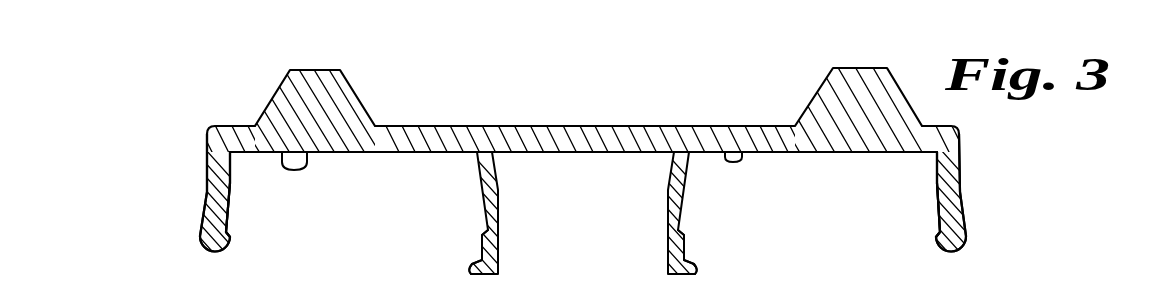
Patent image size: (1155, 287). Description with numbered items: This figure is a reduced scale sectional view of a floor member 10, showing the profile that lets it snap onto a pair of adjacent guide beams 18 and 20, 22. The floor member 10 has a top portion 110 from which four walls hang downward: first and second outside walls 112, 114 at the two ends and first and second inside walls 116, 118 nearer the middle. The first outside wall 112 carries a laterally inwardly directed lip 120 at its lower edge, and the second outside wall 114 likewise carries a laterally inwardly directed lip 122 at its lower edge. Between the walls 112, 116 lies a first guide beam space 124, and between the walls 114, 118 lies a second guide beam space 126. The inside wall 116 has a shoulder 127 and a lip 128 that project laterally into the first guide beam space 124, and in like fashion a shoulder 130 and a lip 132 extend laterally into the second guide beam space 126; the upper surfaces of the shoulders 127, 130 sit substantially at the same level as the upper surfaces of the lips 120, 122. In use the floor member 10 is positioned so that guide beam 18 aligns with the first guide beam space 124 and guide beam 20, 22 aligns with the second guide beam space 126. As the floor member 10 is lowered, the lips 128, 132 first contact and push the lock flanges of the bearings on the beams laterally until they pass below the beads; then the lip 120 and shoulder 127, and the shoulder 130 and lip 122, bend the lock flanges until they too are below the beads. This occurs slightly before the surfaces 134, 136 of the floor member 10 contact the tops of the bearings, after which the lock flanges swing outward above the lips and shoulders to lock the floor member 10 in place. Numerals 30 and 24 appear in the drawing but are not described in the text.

The floor member 10 is at (560, 125).
The top portion 110 is at (660, 125).
The first outside wall 112 is at (208, 208).
The second outside wall 114 is at (965, 210).
The first inside wall 116 is at (482, 197).
The second inside wall 118 is at (686, 192).
The lip 120 is at (229, 236).
The lip 122 is at (938, 233).
The first guide beam space 124 is at (387, 187).
The second guide beam space 126 is at (882, 185).
The shoulder 127 is at (484, 234).
The lip 128 is at (471, 270).
The shoulder 130 is at (684, 236).
The lip 132 is at (694, 268).
The surface 134 is at (285, 165).
The surface 136 is at (737, 162).
The rail 30 is at (263, 273).
The guide beam 20 is at (344, 277).
The rail member 24 is at (810, 274).
The guide beam 18 is at (862, 286).
The guide beam 22 is at (1103, 283).